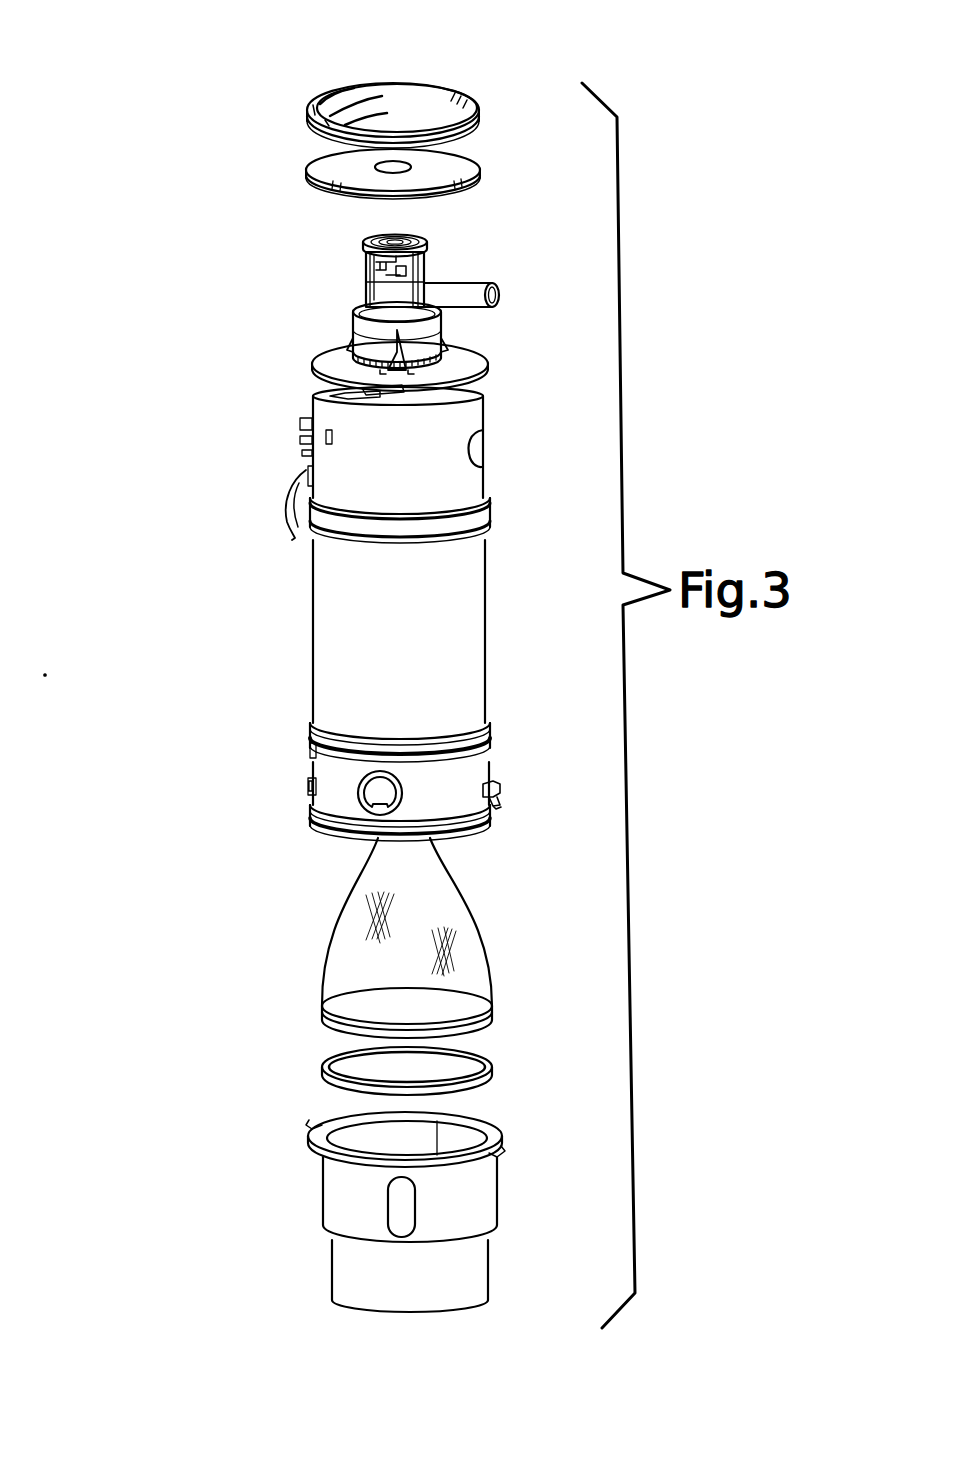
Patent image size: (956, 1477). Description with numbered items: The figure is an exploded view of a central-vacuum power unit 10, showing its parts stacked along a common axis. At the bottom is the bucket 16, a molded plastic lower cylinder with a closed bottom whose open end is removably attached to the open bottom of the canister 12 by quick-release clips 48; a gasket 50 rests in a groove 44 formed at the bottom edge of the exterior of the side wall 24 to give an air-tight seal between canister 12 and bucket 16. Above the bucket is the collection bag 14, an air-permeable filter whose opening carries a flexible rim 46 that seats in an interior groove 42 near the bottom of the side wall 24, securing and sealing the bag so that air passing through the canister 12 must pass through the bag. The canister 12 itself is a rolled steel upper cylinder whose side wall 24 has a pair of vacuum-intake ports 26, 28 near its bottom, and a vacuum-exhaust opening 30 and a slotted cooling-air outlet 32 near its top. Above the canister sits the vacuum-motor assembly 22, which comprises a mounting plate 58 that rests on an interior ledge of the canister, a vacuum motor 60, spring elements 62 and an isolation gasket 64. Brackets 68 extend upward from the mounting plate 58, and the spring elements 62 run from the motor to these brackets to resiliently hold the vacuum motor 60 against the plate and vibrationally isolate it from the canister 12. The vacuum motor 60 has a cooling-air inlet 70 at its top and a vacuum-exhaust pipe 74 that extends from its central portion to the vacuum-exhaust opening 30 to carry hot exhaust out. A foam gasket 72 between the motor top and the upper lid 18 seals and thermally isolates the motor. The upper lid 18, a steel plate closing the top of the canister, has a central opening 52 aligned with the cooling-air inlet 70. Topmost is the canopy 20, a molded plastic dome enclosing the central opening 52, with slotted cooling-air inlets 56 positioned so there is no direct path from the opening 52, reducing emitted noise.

The central-vacuum power unit 10 is at (135, 520).
The canister 12 is at (395, 626).
The collection bag 14 is at (350, 942).
The bucket 16 is at (315, 1183).
The upper lid 18 is at (368, 191).
The canopy 20 is at (424, 74).
The vacuum-motor assembly 22 is at (404, 286).
The side wall 24 is at (313, 655).
The vacuum-intake port 26 is at (360, 806).
The vacuum-intake port 28 is at (313, 748).
The vacuum-exhaust opening 30 is at (483, 450).
The cooling-air outlet 32 is at (330, 400).
The groove 42 is at (492, 738).
The groove 44 is at (492, 818).
The flexible rim 46 is at (323, 1012).
The quick-release clips 48 is at (500, 797).
The gasket 50 is at (325, 1072).
The central opening 52 is at (398, 169).
The cooling-air inlets 56 is at (455, 100).
The mounting plate 58 is at (488, 360).
The vacuum motor 60 is at (340, 255).
The spring elements 62 is at (442, 332).
The isolation gasket 64 is at (354, 341).
The brackets 68 is at (406, 372).
The cooling-air inlet 70 is at (393, 240).
The gasket 72 is at (358, 243).
The vacuum-exhaust pipe 74 is at (472, 283).